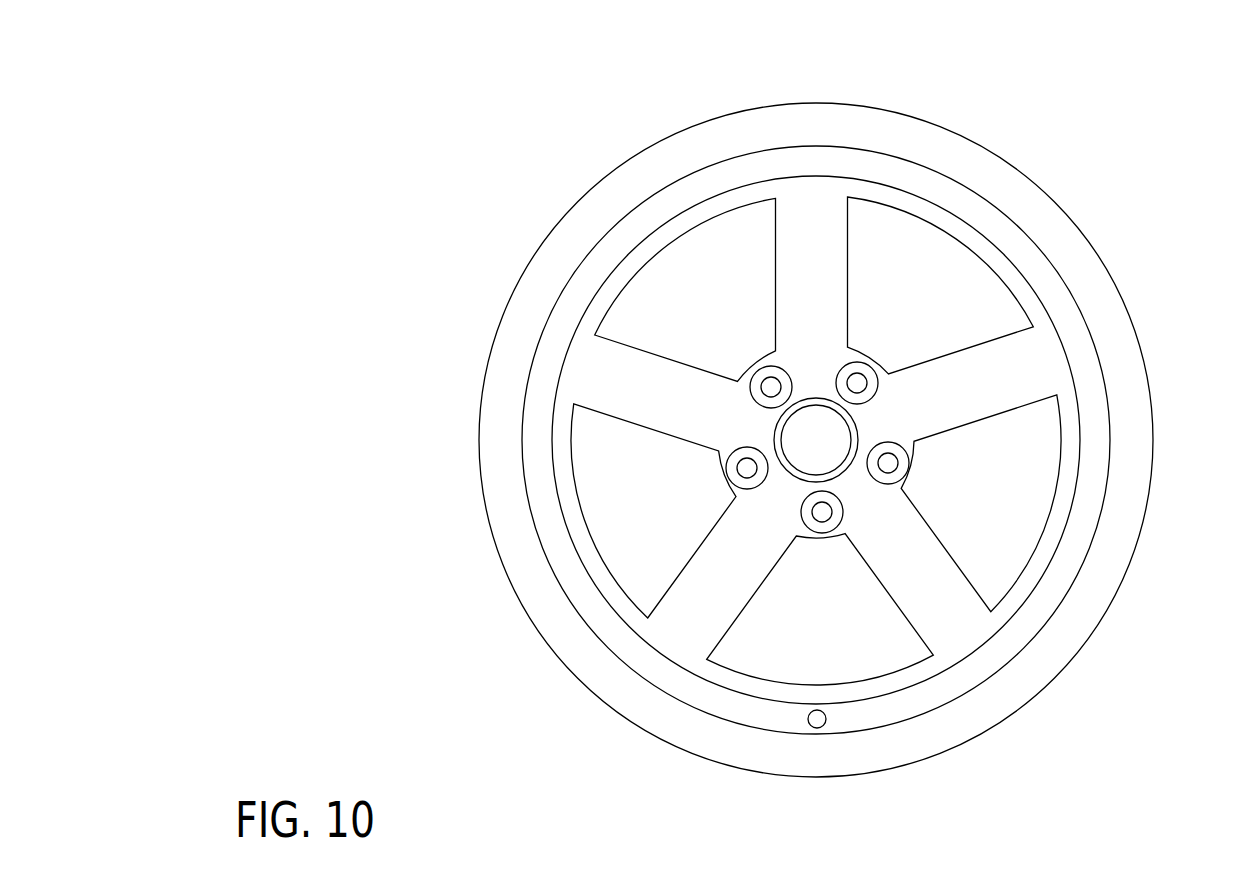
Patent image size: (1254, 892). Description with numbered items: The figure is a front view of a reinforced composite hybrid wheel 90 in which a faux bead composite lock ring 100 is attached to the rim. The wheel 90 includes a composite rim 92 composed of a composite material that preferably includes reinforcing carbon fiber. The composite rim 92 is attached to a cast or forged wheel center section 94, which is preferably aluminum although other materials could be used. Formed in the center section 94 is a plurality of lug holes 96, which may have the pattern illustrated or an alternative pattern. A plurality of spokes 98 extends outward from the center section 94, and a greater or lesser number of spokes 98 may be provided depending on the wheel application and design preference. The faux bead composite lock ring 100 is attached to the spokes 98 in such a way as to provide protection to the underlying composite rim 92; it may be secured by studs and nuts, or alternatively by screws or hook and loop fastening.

The reinforced composite hybrid wheel 90 is at (1138, 170).
The composite rim 92 is at (1132, 390).
The cast or forged wheel center section 94 is at (726, 446).
The lug holes 96 is at (766, 381).
The spokes 98 is at (820, 275).
The faux bead composite lock ring 100 is at (1038, 265).